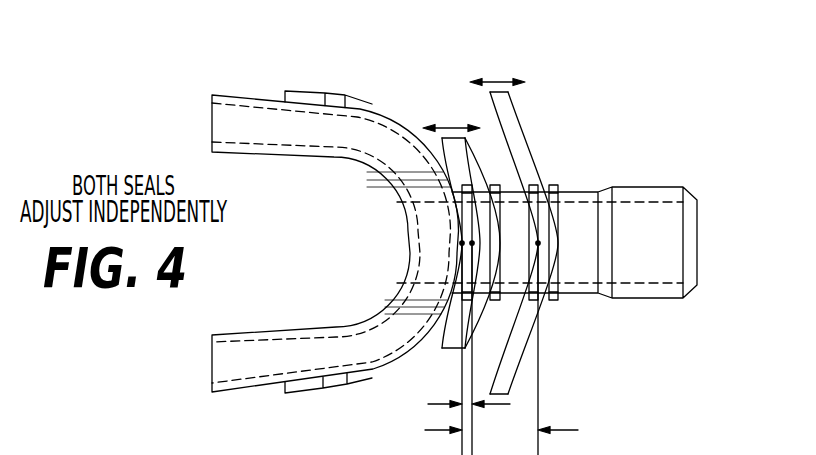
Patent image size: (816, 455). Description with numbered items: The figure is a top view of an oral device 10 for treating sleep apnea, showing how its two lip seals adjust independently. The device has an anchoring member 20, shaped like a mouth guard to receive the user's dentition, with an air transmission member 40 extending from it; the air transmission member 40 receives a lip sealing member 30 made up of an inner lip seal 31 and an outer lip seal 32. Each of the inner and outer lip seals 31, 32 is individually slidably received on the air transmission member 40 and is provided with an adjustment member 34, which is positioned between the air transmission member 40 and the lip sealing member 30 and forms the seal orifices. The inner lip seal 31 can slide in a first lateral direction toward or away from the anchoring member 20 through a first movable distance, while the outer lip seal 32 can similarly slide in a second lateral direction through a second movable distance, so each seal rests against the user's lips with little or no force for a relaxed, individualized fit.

The oral device 10 is at (592, 56).
The anchoring member 20 is at (229, 78).
The lip sealing member 30 is at (432, 62).
The inner lip seal 31 is at (450, 348).
The outer lip seal 32 is at (527, 122).
The adjustment member 34 is at (492, 185).
The air transmission member 40 is at (652, 190).